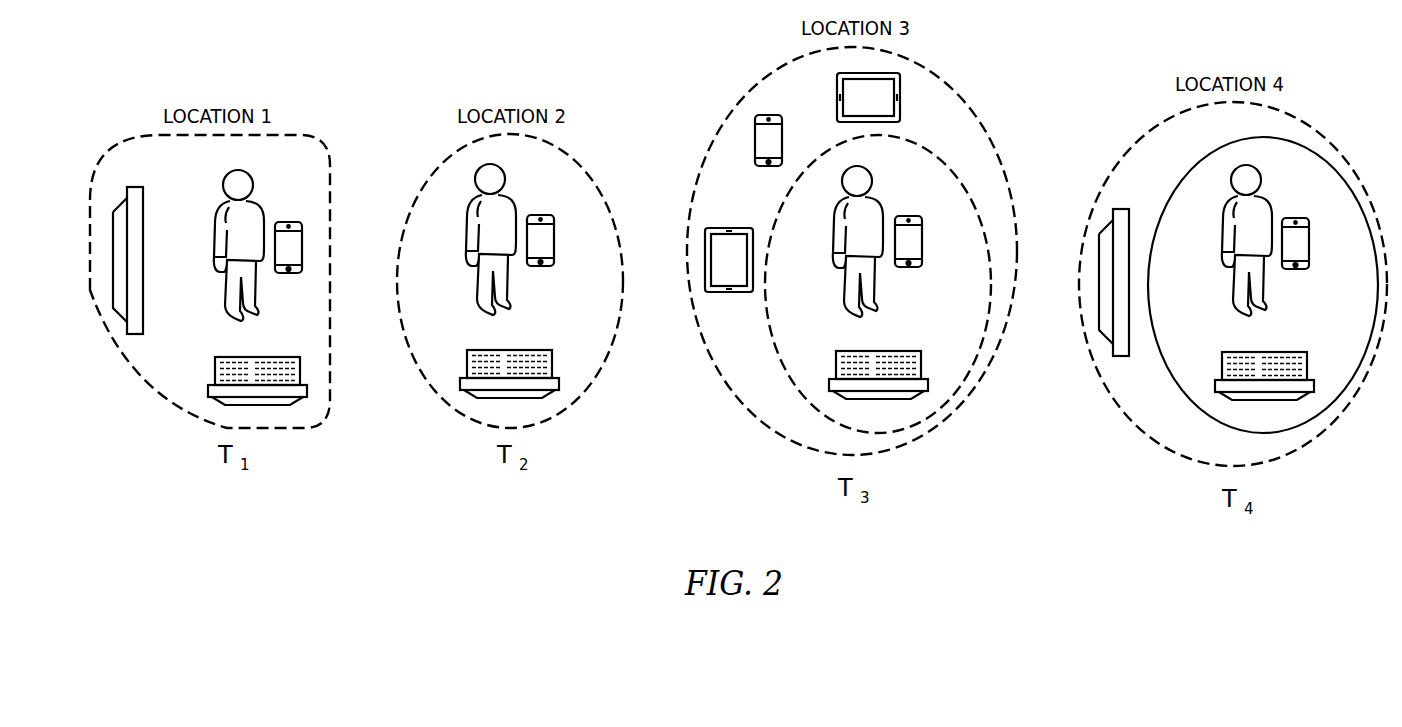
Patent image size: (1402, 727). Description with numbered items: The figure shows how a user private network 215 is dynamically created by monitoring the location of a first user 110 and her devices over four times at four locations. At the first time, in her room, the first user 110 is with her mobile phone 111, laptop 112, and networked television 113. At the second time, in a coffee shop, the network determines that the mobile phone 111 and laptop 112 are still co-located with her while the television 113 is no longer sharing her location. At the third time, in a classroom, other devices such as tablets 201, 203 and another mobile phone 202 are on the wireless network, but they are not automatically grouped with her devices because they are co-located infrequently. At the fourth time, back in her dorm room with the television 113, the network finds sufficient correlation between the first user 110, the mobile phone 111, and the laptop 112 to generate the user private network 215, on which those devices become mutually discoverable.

The first user 110 is at (222, 206).
The mobile phone 111 is at (303, 240).
The laptop 112 is at (254, 358).
The networked television 113 is at (144, 290).
The tablet 201 is at (723, 228).
The mobile phone 202 is at (753, 143).
The tablet 203 is at (836, 88).
The user private network 215 is at (1205, 412).